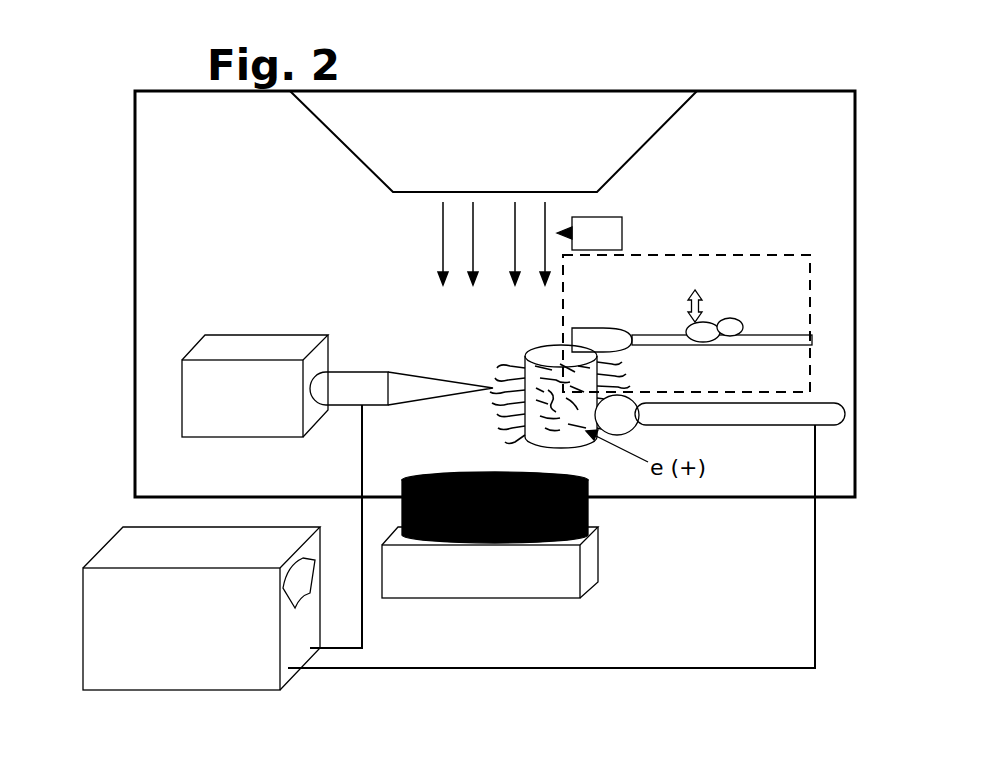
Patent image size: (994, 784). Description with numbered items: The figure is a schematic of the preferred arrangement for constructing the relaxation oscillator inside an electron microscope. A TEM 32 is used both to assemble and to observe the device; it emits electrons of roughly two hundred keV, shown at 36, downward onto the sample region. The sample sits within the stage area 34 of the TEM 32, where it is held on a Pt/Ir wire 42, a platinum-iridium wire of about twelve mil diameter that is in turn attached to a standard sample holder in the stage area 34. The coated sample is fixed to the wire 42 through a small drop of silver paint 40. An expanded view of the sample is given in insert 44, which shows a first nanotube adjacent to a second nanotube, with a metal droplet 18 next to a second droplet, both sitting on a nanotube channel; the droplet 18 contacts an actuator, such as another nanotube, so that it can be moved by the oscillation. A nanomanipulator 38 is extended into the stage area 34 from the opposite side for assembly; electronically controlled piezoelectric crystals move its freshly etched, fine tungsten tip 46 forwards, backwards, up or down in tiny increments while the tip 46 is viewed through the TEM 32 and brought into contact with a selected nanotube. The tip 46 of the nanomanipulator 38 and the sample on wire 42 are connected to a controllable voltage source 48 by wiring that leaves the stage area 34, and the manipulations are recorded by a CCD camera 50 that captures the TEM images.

The metal droplet 18 is at (727, 330).
The TEM 32 is at (522, 151).
The stage area 34 is at (135, 185).
The electrons 36 is at (589, 233).
The nanomanipulator 38 is at (355, 405).
The silver paint 40 is at (618, 397).
The Pt/Ir wire 42 is at (787, 412).
The insert 44 is at (810, 272).
The manipulator tip 46 is at (606, 324).
The controllable voltage source 48 is at (131, 644).
The CCD camera 50 is at (497, 582).